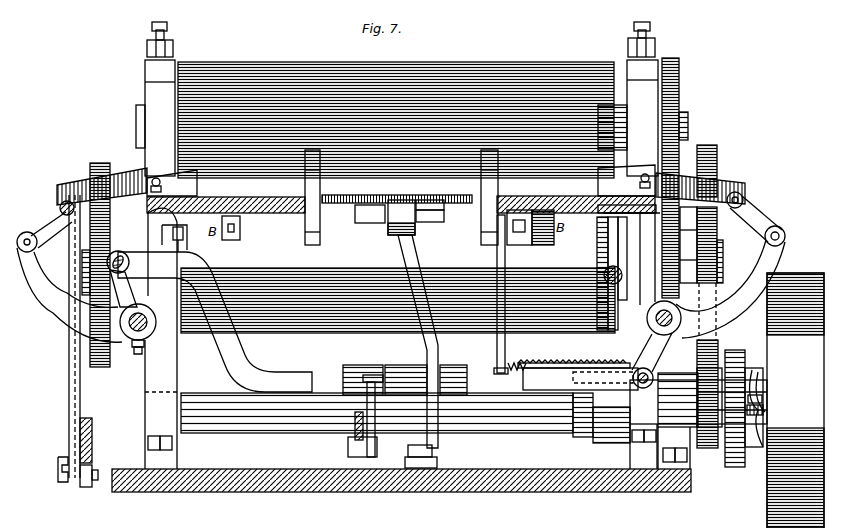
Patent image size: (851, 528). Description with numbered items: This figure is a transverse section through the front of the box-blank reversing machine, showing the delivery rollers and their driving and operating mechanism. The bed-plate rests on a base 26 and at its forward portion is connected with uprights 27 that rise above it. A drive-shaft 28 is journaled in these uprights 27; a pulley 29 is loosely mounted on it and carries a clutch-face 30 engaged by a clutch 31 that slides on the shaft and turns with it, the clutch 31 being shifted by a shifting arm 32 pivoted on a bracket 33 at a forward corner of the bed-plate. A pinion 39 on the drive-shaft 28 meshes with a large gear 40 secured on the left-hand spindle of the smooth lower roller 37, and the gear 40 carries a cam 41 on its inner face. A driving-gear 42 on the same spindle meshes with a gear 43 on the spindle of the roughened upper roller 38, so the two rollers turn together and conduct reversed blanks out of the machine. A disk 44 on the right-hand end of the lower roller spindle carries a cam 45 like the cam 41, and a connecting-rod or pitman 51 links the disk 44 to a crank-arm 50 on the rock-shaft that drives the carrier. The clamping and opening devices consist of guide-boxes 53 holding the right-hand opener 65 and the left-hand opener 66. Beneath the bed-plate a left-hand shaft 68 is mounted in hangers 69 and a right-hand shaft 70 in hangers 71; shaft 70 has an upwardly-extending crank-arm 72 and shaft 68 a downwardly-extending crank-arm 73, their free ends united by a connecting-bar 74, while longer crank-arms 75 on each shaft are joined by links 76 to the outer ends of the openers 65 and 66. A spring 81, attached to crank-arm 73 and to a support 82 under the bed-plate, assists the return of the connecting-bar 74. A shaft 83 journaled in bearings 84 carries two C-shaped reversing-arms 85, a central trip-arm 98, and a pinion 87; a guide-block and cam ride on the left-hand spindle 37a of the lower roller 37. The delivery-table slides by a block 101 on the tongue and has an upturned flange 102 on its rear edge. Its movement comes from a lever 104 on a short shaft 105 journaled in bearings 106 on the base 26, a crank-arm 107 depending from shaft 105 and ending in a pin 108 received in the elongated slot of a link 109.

The upper roller 38 is at (312, 63).
The uprights 27 is at (397, 99).
The gear 43 is at (679, 82).
The cam 41 is at (682, 140).
The large gear 40 is at (712, 147).
The guide-box 53 is at (401, 180).
The cam 45 is at (104, 176).
The right-hand opener 65 is at (66, 186).
The left-hand opener 66 is at (742, 180).
The links 76 is at (46, 220).
The crank-arm 75 is at (766, 262).
The connecting-bar 74 is at (372, 321).
The crank-arm 72 is at (123, 288).
The shaft 70 is at (144, 341).
The hangers 71 is at (195, 242).
The bearings 84 is at (286, 243).
The reversing-arms 85 is at (312, 246).
The shaft 83 is at (368, 224).
The trip-arm 98 is at (401, 217).
The block 101 is at (430, 207).
The flange 102 is at (444, 216).
The pinion 87 is at (554, 240).
The driving-gear 42 is at (656, 214).
The hangers 69 is at (626, 273).
The spindle 37a is at (600, 318).
The lower roller 37 is at (308, 328).
The support 82 is at (497, 350).
The spring 81 is at (572, 338).
The lever 104 is at (428, 350).
The short shaft 105 is at (343, 372).
The drive-shaft 28 is at (530, 428).
The link 109 is at (352, 438).
The pin 108 is at (377, 448).
The crank-arm 107 is at (376, 438).
The bearings 106 is at (432, 438).
The base 26 is at (530, 492).
The bracket 33 is at (680, 490).
The shaft 68 is at (662, 330).
The crank-arm 73 is at (654, 376).
The pinion 39 is at (716, 450).
The shifting arm 32 is at (734, 352).
The clutch 31 is at (758, 366).
The clutch-face 30 is at (760, 448).
The pulley 29 is at (776, 400).
The connecting-rod or pitman 51 is at (69, 372).
The disk 44 is at (102, 368).
The crank-arm 50 is at (93, 442).